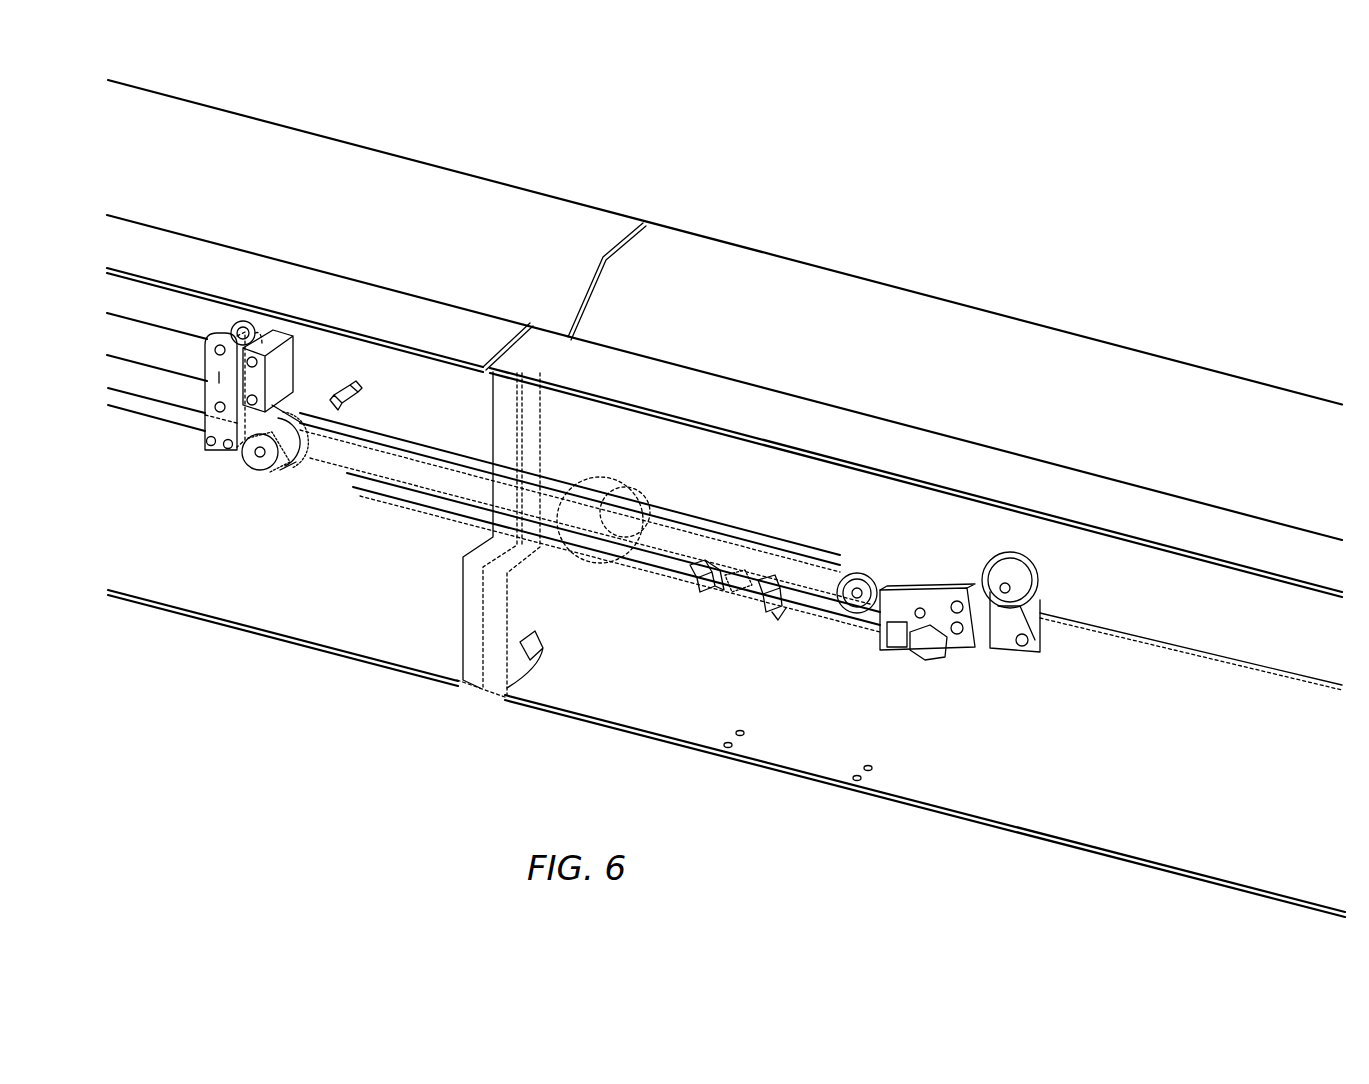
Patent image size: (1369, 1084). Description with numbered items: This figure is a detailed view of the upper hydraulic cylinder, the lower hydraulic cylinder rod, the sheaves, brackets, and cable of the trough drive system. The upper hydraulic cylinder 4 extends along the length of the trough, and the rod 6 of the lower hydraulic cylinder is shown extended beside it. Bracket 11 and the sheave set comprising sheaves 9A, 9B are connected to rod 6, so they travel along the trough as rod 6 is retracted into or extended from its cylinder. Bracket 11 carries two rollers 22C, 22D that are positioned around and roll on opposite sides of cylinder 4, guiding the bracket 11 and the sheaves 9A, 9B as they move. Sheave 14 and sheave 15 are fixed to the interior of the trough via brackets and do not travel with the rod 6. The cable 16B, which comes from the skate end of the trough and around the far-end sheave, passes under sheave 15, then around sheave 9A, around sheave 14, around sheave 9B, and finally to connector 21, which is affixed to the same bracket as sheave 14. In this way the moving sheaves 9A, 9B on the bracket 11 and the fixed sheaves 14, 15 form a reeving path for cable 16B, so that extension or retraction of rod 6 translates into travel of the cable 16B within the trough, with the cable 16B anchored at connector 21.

The hydraulic cylinder 4 is at (141, 351).
The rod 6 is at (143, 418).
The bracket 11 is at (210, 335).
The roller 22C is at (232, 328).
The roller 22D is at (205, 398).
The sheave 9A is at (313, 390).
The sheave 9B is at (282, 478).
The cable 16B is at (379, 478).
The sheave 14 is at (857, 575).
The sheave 15 is at (1040, 565).
The connector 21 is at (803, 612).